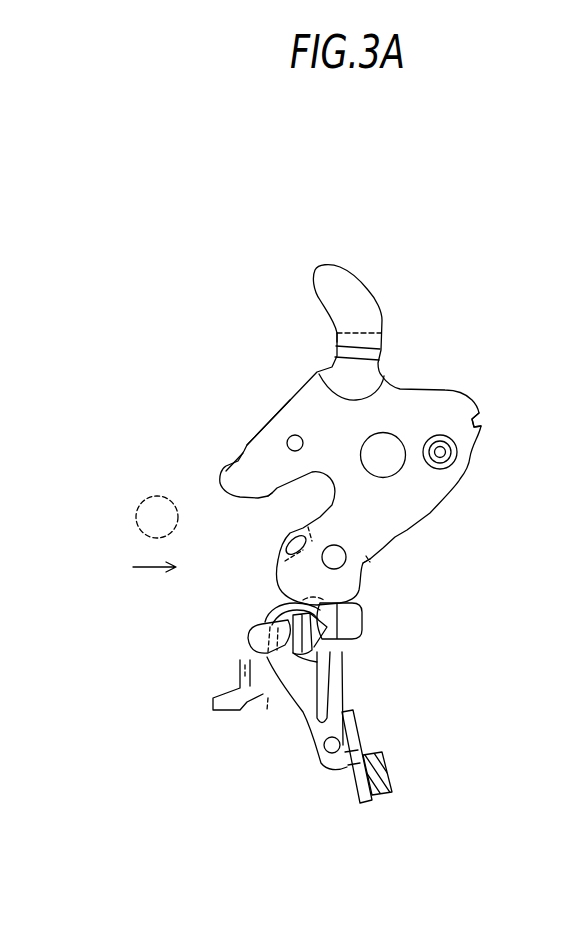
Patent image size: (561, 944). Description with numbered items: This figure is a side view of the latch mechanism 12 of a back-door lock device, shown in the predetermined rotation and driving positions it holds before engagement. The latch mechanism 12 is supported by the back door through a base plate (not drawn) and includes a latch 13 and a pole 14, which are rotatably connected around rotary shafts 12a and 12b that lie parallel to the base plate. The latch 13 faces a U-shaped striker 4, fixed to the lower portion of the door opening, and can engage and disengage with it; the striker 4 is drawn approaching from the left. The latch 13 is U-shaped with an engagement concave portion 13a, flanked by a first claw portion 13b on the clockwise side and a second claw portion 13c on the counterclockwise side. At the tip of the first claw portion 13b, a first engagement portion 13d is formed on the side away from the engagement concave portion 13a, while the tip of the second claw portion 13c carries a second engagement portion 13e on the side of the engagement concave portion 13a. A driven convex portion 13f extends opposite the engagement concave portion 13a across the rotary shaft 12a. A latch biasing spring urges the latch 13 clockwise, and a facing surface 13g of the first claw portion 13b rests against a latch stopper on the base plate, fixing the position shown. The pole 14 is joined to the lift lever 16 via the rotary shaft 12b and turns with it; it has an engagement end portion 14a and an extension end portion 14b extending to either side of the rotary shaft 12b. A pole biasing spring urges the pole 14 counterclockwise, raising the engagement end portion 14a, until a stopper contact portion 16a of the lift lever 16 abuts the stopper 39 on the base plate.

The striker 4 is at (138, 525).
The latch mechanism 12 is at (439, 314).
The rotary shaft 12a is at (393, 470).
The rotary shaft 12b is at (274, 688).
The latch 13 is at (438, 392).
The engagement concave portion 13a is at (271, 494).
The first claw portion 13b is at (262, 452).
The second claw portion 13c is at (366, 560).
The first engagement portion 13d is at (220, 457).
The second engagement portion 13e is at (282, 552).
The driven convex portion 13f is at (333, 272).
The facing surface 13g is at (482, 426).
The pole 14 is at (360, 628).
The engagement end portion 14a is at (352, 642).
The extension end portion 14b is at (276, 606).
The lift lever 16 is at (240, 670).
The stopper contact portion 16a is at (352, 788).
The stopper 39 is at (388, 767).